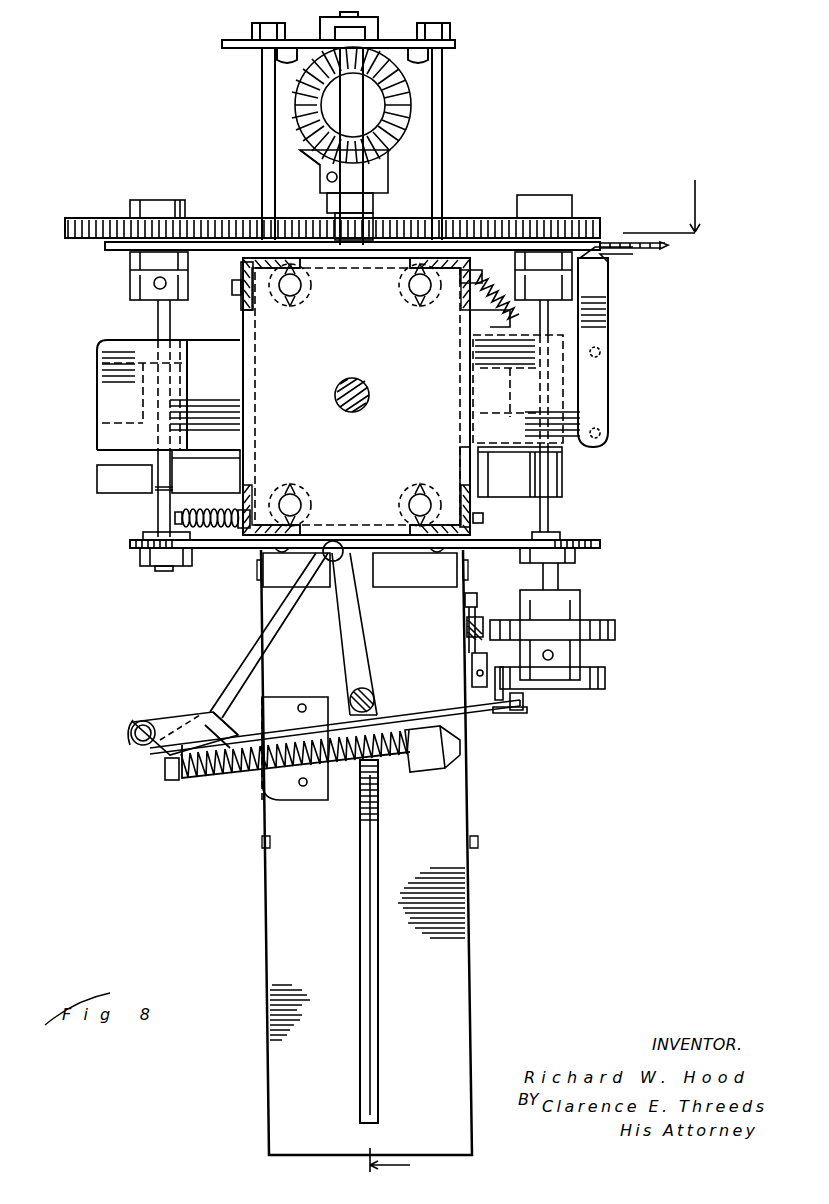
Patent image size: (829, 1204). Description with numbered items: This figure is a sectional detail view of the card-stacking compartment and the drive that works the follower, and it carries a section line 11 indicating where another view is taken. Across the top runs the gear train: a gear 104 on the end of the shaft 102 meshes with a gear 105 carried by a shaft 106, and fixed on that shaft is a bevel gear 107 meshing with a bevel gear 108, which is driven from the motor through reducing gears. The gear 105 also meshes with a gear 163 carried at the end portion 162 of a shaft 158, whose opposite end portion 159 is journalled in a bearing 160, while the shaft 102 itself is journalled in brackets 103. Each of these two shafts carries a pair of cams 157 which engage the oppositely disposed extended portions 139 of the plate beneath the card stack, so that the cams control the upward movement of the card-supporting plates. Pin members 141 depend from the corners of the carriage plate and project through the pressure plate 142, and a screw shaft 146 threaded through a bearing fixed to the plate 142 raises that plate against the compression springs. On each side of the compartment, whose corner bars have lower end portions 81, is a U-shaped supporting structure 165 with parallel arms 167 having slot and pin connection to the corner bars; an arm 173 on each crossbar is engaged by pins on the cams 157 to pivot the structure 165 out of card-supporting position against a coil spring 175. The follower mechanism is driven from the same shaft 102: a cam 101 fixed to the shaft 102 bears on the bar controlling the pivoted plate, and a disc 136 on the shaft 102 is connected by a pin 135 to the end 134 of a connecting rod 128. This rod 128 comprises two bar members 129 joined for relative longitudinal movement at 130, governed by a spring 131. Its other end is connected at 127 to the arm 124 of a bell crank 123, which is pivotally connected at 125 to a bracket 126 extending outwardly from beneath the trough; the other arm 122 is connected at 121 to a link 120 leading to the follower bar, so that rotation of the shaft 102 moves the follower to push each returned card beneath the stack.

The section line 11 is at (537, 670).
The lower end portions 81 is at (262, 305).
The cam 101 is at (612, 632).
The shaft 102 is at (560, 578).
The brackets 103 is at (665, 246).
The gear 104 is at (572, 215).
The gear 105 is at (405, 222).
The shaft 106 is at (352, 205).
The bevel gear 107 is at (372, 178).
The bevel gear 108 is at (412, 98).
The link 120 is at (332, 640).
The connection 121 is at (300, 580).
The arm 122 is at (258, 632).
The bell crank 123 is at (211, 680).
The arm 124 is at (165, 762).
The pivotal connection 125 is at (133, 745).
The bracket 126 is at (248, 792).
The connection 127 is at (192, 725).
The connecting rod 128 is at (487, 713).
The bar members 129 is at (270, 700).
The connection 130 is at (300, 710).
The spring 131 is at (315, 770).
The end 134 is at (535, 705).
The pin 135 is at (520, 715).
The disc 136 is at (605, 676).
The extended portions 139 is at (97, 410).
The pin members 141 is at (410, 285).
The pressure plate 142 is at (393, 447).
The screw shaft 146 is at (370, 396).
The cams 157 is at (97, 350).
The shaft 158 is at (158, 318).
The end portion 159 is at (158, 528).
The bearing 160 is at (160, 575).
The end portion 162 is at (152, 200).
The gear 163 is at (135, 216).
The U-shaped supporting structure 165 is at (243, 298).
The arm 167 is at (130, 262).
The arm 173 is at (97, 475).
The coil spring 175 is at (480, 290).